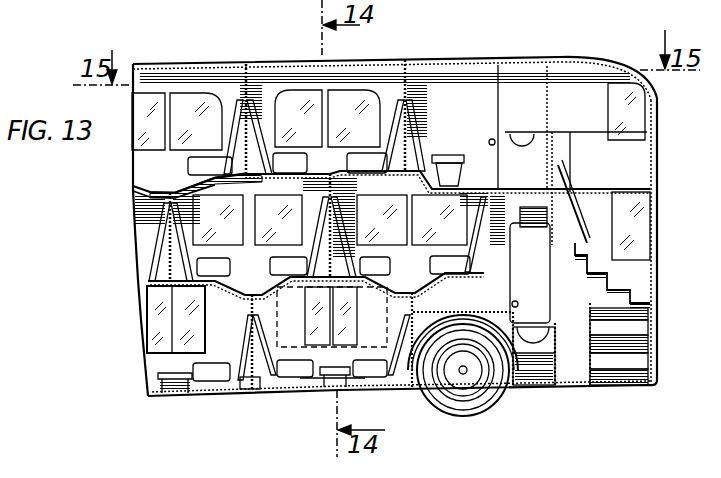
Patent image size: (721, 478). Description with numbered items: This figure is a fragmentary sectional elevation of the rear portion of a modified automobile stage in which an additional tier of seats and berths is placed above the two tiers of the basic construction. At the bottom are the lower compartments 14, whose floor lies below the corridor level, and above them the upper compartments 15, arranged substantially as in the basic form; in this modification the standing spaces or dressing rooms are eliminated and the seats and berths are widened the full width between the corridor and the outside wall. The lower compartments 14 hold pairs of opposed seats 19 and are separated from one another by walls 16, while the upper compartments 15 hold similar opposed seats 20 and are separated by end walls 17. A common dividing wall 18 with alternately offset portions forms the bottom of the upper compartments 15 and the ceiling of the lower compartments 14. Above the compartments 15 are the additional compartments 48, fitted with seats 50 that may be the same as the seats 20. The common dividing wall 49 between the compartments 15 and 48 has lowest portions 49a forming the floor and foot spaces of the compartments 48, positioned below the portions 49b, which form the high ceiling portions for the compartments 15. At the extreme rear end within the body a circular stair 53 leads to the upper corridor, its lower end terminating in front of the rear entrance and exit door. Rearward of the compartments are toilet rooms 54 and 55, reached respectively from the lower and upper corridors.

The upper compartments 48 is at (220, 85).
The seats 50 is at (264, 130).
The toilet room 55 is at (433, 80).
The upper compartments 15 is at (186, 227).
The seats 20 is at (153, 270).
The common dividing walls 18 is at (216, 283).
The lower compartments 14 is at (213, 350).
The seats 19 is at (231, 381).
The walls 16 is at (253, 390).
The end walls 17 is at (327, 195).
The portions of the wall 49b is at (210, 177).
The common dividing wall 49 is at (198, 183).
The lowest portions of the common dividing wall 49a is at (185, 191).
The circular stair 53 is at (630, 289).
The toilet room 54 is at (470, 303).